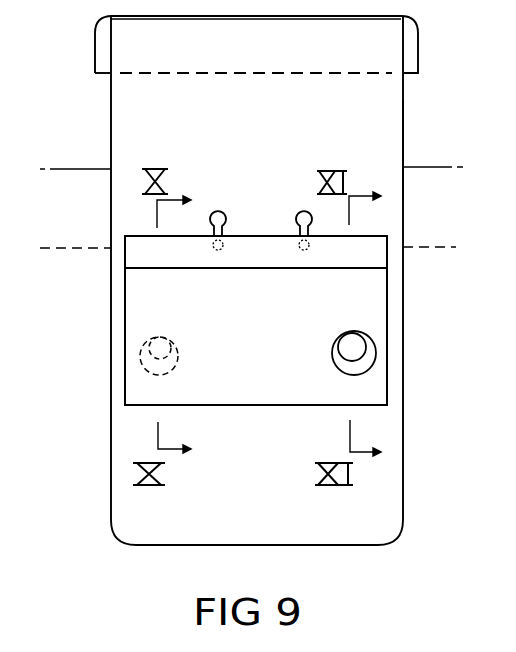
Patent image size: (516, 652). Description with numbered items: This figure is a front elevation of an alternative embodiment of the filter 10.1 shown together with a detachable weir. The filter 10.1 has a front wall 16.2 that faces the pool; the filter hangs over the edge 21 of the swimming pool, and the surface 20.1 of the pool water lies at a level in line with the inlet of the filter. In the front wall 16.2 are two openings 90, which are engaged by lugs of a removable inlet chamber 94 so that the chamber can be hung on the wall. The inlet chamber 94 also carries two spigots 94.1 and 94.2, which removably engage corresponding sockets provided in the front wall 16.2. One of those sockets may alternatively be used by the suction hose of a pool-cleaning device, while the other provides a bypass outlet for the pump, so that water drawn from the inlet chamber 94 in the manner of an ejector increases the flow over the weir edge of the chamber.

The filter 10.1 is at (412, 124).
The front wall 16.2 is at (376, 149).
The edge of swimming pool 21 is at (88, 169).
The surface of water 20.1 is at (80, 250).
The openings 90 is at (298, 203).
The removable inlet chamber 94 is at (137, 328).
The spigot 94.1 is at (183, 356).
The spigot 94.2 is at (333, 342).